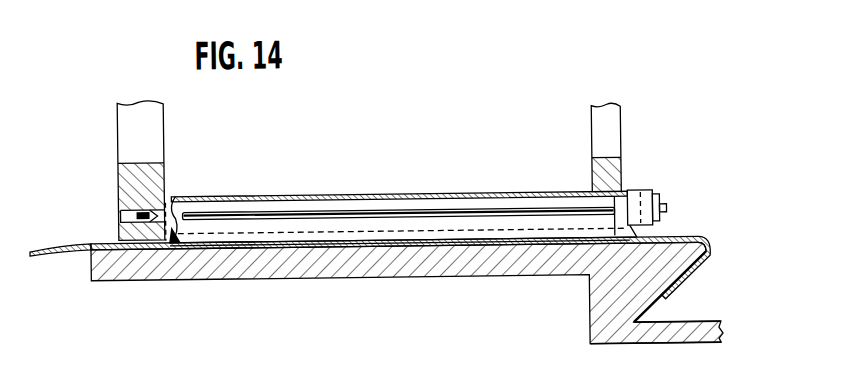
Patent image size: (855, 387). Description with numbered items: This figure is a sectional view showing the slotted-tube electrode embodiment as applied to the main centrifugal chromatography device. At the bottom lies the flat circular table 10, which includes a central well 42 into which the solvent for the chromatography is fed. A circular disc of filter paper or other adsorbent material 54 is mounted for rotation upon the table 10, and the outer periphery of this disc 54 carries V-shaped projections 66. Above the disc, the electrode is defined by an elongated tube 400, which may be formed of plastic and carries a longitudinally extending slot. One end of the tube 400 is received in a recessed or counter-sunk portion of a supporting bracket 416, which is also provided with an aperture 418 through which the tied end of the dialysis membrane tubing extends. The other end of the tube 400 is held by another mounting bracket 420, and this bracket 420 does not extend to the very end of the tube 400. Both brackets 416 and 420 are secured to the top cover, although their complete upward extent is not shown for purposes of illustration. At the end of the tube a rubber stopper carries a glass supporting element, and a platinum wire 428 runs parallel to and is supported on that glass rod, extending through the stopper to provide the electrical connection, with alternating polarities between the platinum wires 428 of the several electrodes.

The flat circular table 10 is at (421, 266).
The central well 42 is at (712, 307).
The adsorbent material disc 54 is at (330, 243).
The V-shaped projections 66 is at (72, 258).
The elongated tube 400 is at (407, 182).
The supporting bracket 416 is at (160, 180).
The aperture 418 is at (131, 214).
The mounting bracket 420 is at (608, 170).
The platinum wire 428 is at (667, 203).